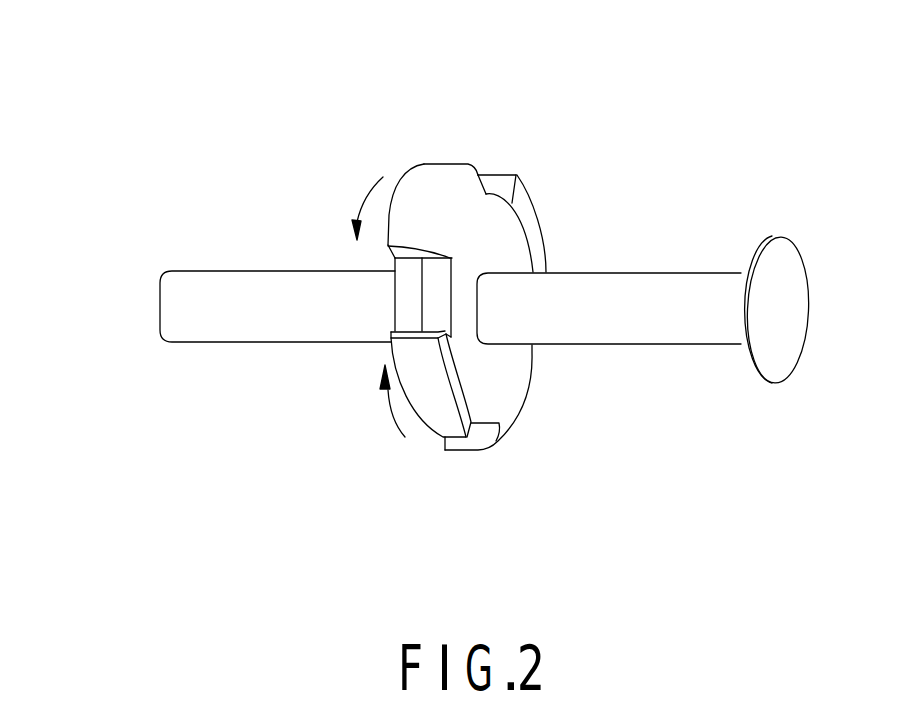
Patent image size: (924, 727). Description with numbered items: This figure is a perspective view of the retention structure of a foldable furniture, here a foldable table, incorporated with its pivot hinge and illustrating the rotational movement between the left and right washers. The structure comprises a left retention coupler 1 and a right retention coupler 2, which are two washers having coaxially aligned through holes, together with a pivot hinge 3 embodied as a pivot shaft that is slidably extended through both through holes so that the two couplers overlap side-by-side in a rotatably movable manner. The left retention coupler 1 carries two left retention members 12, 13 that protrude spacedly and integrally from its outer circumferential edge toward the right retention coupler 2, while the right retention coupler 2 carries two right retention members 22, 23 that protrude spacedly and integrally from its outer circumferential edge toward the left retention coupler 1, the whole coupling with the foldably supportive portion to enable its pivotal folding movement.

The left retention coupler 1 is at (403, 293).
The right retention coupler 2 is at (493, 248).
The pivot hinge 3 is at (780, 311).
The left retention member 12 is at (430, 415).
The left retention member 13 is at (508, 183).
The right retention member 22 is at (425, 197).
The right retention member 23 is at (515, 418).